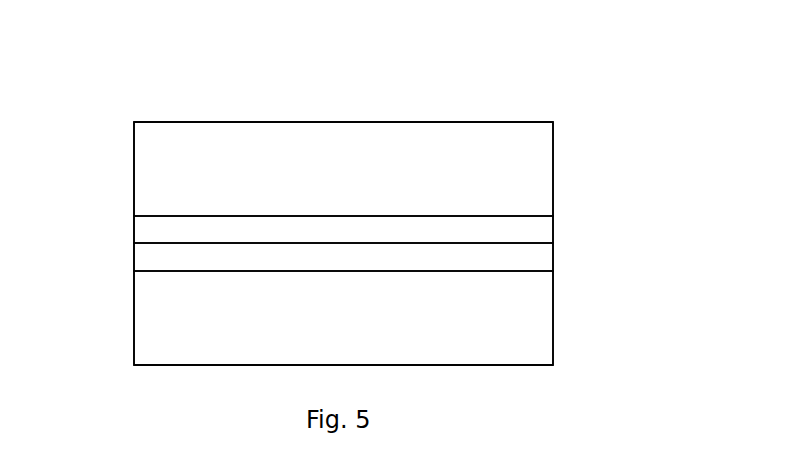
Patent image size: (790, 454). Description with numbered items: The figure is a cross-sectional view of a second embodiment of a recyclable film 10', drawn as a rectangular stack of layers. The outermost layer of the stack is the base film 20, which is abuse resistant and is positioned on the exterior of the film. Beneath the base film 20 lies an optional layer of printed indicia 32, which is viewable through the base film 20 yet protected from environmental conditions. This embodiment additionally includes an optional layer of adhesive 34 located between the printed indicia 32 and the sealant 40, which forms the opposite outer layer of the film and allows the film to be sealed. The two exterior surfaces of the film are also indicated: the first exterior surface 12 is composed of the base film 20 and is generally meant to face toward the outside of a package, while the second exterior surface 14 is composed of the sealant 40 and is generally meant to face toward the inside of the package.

The recyclable film 10' is at (406, 222).
The first exterior surface 12 is at (422, 120).
The second exterior surface 14 is at (457, 365).
The base film 20 is at (152, 174).
The layer of printed indicia 32 is at (152, 227).
The layer of adhesive 34 is at (152, 260).
The sealant 40 is at (152, 324).